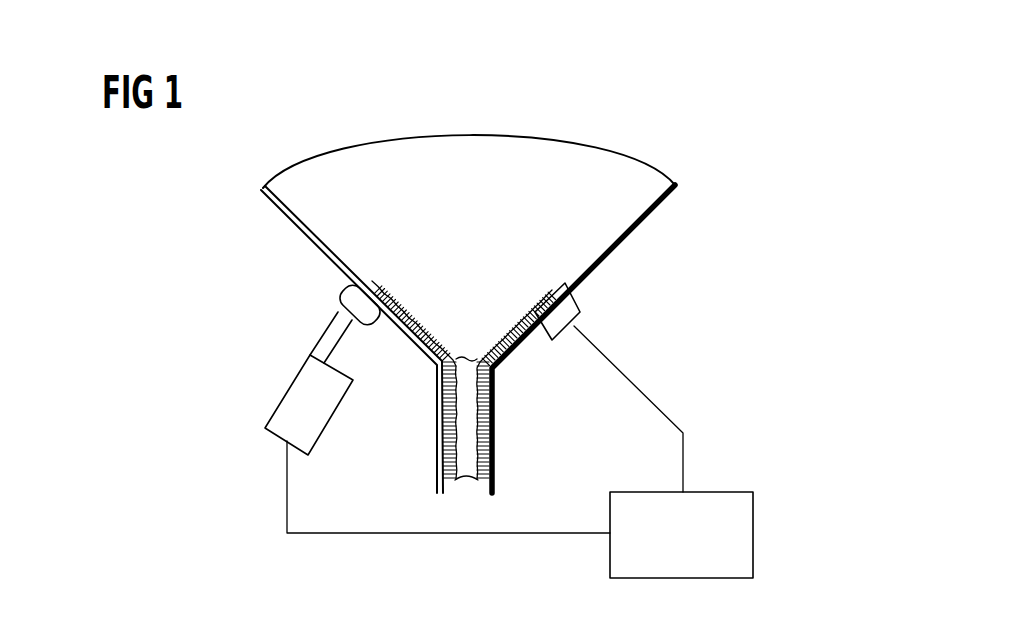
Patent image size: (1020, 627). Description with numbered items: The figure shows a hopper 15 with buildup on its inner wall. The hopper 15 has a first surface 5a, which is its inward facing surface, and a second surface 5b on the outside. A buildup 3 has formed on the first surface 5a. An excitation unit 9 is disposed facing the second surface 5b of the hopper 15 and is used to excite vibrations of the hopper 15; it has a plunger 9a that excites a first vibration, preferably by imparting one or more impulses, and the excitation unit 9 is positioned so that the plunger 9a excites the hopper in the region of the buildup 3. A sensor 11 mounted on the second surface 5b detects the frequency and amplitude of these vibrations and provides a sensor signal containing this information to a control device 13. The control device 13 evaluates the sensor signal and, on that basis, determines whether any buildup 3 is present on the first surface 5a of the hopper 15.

The hopper 15 is at (340, 134).
The first surface 5a is at (645, 206).
The second surface 5b is at (641, 247).
The buildup 3 is at (349, 291).
The plunger 9a is at (333, 338).
The excitation unit 9 is at (233, 383).
The sensor 11 is at (577, 302).
The control device 13 is at (753, 534).